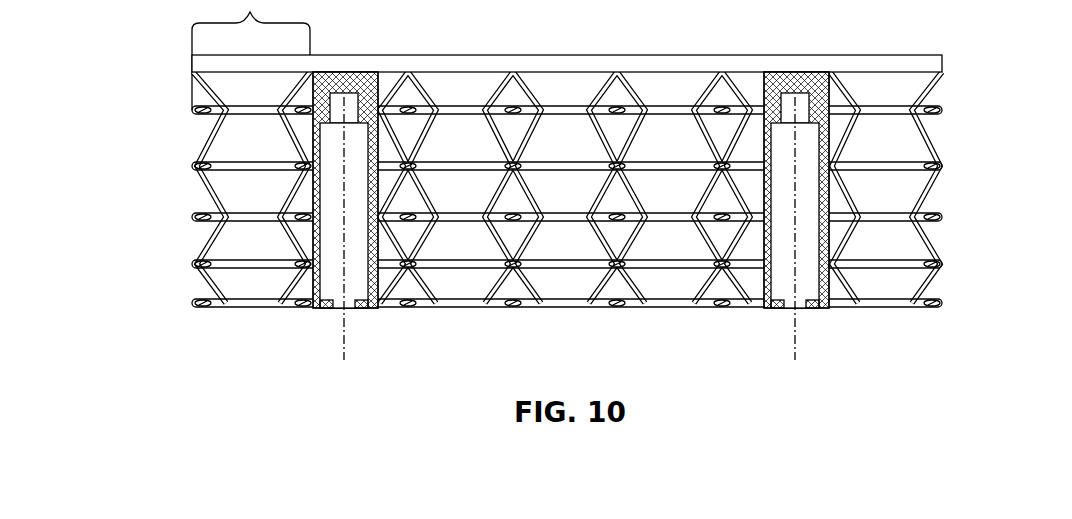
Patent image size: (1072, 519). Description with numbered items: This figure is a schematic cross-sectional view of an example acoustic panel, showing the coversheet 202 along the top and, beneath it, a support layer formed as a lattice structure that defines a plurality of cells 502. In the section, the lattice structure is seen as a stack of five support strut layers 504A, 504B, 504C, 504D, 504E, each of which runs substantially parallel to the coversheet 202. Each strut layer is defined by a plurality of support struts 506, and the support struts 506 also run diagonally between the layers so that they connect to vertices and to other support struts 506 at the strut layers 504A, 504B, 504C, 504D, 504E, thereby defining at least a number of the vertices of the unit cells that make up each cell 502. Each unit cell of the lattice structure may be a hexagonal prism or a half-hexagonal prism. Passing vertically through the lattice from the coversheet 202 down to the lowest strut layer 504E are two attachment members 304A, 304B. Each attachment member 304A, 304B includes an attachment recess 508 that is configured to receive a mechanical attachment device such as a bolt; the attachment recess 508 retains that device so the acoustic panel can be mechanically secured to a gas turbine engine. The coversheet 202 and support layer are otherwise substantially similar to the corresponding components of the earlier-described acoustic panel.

The coversheet 202 is at (920, 54).
The cell 502 is at (567, 151).
The support strut layer 504A is at (192, 110).
The support strut layer 504B is at (192, 166).
The support strut layer 504C is at (192, 217).
The support strut layer 504D is at (192, 264).
The support strut layer 504E is at (192, 303).
The support strut 506 is at (495, 88).
The attachment member 304A is at (342, 308).
The attachment member 304B is at (797, 312).
The attachment recess 508 is at (360, 283).